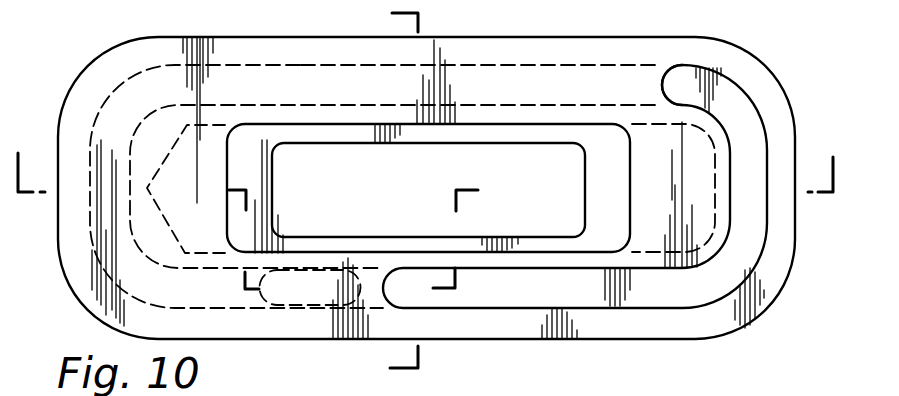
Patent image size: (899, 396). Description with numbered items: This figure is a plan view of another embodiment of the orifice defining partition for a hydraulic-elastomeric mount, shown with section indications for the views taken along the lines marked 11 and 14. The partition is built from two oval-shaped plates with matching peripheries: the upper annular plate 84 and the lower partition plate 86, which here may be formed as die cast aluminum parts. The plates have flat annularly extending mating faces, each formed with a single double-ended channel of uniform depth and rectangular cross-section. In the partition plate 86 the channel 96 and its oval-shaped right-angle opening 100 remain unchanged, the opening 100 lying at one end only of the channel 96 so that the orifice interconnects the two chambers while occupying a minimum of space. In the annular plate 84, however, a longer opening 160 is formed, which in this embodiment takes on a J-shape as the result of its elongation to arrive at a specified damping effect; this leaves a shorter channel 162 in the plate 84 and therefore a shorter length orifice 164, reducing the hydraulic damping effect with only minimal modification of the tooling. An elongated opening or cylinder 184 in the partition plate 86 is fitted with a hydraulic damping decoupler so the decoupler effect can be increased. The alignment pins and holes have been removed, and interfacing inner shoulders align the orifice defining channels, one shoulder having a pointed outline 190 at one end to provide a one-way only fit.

The upper annular plate 84 is at (633, 47).
The lower partition plate 86 is at (318, 133).
The channel 96 is at (748, 239).
The right-angle opening 100 is at (292, 272).
The longer opening 160 is at (741, 92).
The shorter channel 162 is at (256, 71).
The shorter length orifice 164 is at (462, 68).
The elongated opening 184 is at (502, 144).
The pointed outline 190 is at (168, 150).
The section line 14- 14 is at (353, 192).
The section line 11- 11 is at (431, 195).